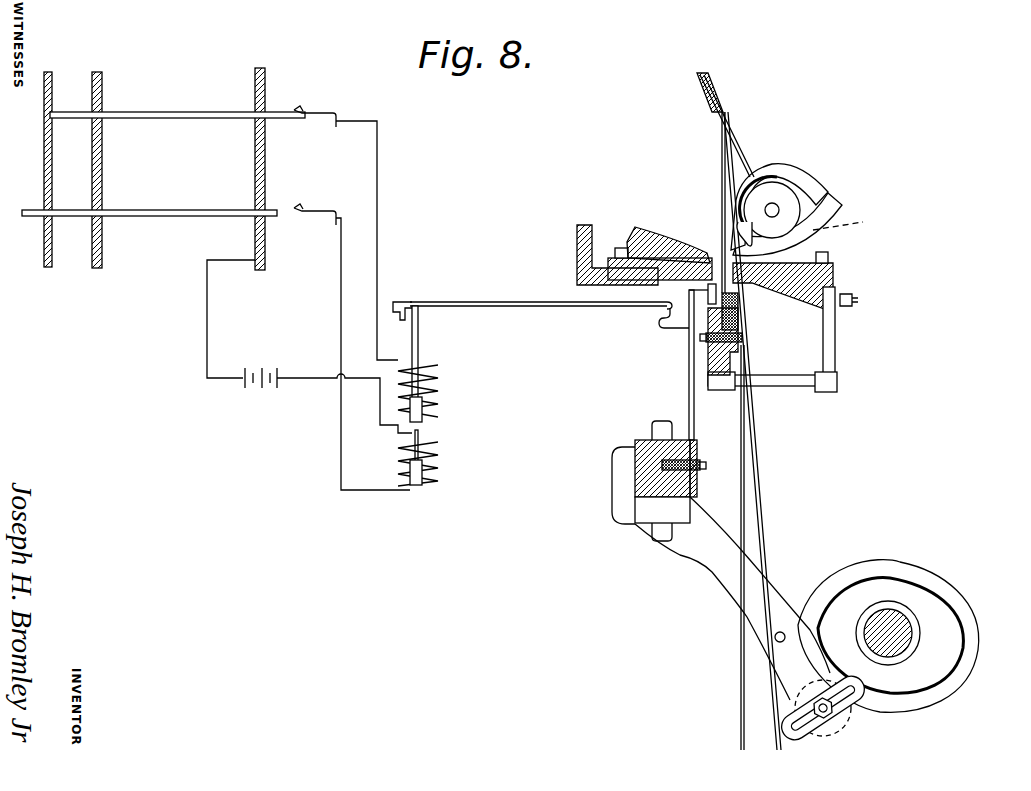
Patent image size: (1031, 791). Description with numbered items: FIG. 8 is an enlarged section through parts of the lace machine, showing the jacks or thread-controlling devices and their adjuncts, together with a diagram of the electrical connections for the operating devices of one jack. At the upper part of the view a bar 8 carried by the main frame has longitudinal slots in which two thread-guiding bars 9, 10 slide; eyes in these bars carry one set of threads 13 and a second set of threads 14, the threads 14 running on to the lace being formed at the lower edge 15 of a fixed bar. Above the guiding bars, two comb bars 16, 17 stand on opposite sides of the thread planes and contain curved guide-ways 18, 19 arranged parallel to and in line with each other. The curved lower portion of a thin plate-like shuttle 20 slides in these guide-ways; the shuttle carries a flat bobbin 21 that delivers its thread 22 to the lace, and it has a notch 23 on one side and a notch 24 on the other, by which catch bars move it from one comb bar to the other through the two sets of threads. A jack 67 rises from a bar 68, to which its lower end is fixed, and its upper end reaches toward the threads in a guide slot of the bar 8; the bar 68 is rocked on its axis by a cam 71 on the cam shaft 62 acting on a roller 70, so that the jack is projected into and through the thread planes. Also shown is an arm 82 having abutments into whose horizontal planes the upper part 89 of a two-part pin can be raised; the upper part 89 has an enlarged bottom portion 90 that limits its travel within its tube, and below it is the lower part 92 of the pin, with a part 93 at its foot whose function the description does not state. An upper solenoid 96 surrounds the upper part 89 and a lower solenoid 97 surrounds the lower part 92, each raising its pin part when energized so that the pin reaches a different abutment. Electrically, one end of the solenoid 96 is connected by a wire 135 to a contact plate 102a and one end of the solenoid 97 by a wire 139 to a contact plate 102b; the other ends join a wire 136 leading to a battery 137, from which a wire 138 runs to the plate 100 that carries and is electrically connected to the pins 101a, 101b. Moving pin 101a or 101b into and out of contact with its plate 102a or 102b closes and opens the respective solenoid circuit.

The bar 8 is at (742, 332).
The thread-guiding bar 9 is at (713, 318).
The thread-guiding bar 10 is at (743, 313).
The threads 13 is at (723, 207).
The threads 14 is at (727, 192).
The lower edge 15 is at (728, 110).
The comb bar 16 is at (648, 248).
The comb bar 17 is at (817, 243).
The curved guide-ways 18 is at (672, 250).
The curved guide-ways 19 is at (848, 225).
The shuttle 20 is at (805, 213).
The flat bobbin 21 is at (778, 198).
The thread 22 is at (742, 135).
The notch 23 is at (738, 223).
The notch 24 is at (820, 192).
The cam shaft 62 is at (910, 618).
The jack 67 is at (690, 388).
The bar 68 is at (635, 482).
The roller 70 is at (837, 723).
The cam 71 is at (953, 672).
The arm 82 is at (518, 306).
The upper part of two-part pin 89 is at (418, 348).
The enlarged bottom portion 90 is at (423, 405).
The lower part of two-part pin 92 is at (420, 442).
The collar 93 is at (427, 482).
The solenoid 96 is at (437, 378).
The solenoid 97 is at (437, 457).
The plate 100 is at (265, 245).
The pin 101a is at (170, 112).
The pin 101b is at (172, 198).
The contact plate 102a is at (315, 106).
The contact plate 102b is at (321, 195).
The wire 135 is at (379, 217).
The wire 136 is at (302, 384).
The electric battery 137 is at (259, 367).
The wire 138 is at (207, 307).
The wire 139 is at (370, 493).